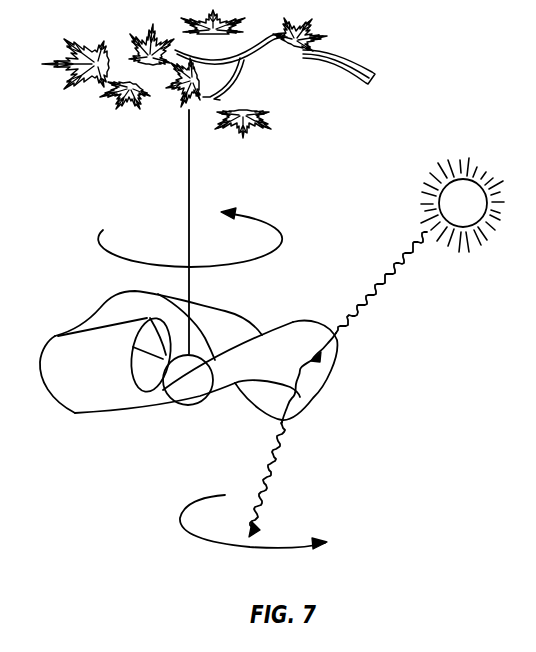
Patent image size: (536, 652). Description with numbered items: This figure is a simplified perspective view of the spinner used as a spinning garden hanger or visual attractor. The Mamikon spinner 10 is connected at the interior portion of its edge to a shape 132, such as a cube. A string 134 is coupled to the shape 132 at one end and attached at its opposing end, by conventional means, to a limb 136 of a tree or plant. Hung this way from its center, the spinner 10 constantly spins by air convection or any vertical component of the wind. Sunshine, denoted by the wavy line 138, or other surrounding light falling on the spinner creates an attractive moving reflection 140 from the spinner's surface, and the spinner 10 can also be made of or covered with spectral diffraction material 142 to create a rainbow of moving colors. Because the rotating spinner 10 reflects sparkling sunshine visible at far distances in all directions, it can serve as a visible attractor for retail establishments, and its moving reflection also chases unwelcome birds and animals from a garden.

The Mamikon spinner 10 is at (335, 388).
The shape 132 is at (187, 405).
The string 134 is at (188, 200).
The limb 136 is at (145, 97).
The wavy line 138 is at (395, 253).
The moving reflection 140 is at (270, 548).
The spectral diffraction material 142 is at (263, 355).